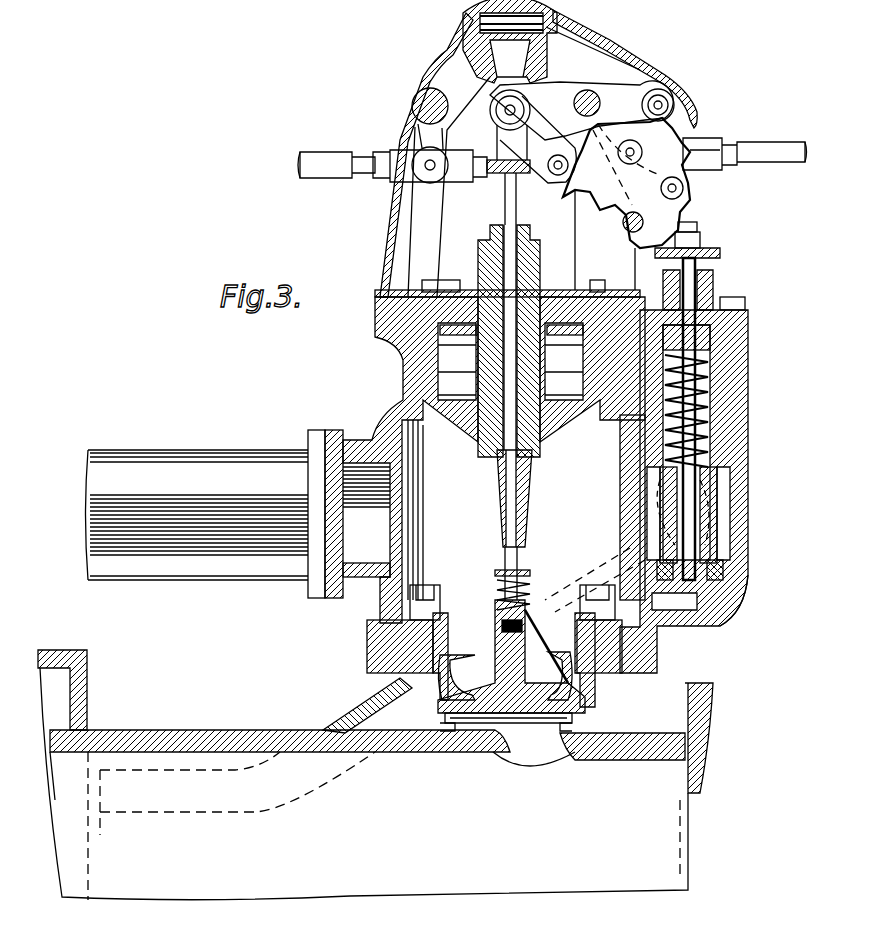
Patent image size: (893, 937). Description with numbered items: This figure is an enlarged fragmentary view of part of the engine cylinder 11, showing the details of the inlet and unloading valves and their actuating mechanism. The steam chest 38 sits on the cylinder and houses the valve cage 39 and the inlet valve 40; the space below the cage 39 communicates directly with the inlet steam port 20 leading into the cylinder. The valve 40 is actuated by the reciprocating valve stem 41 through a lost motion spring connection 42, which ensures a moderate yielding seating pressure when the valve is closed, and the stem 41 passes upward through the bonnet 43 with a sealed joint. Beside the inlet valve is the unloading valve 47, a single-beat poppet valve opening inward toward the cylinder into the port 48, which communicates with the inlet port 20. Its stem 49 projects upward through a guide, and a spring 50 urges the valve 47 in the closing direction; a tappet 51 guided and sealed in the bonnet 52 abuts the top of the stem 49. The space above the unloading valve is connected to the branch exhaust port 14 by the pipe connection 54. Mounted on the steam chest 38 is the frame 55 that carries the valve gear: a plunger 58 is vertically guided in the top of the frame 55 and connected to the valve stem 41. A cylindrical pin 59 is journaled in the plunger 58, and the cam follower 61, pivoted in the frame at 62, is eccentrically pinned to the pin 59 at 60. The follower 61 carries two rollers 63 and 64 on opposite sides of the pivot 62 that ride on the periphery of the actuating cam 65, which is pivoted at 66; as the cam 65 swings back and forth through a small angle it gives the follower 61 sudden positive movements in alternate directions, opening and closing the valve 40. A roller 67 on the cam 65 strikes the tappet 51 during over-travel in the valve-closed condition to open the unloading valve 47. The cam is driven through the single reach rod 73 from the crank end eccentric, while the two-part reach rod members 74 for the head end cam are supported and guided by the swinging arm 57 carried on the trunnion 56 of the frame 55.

The cylinder 11 is at (428, 795).
The branch port 14 is at (88, 702).
The inlet steam port 20 is at (545, 745).
The steam chest 38 is at (398, 418).
The valve cage 39 is at (450, 620).
The valve 40 is at (486, 628).
The valve stem 41 is at (530, 487).
The lost motion spring connection 42 is at (537, 578).
The bonnet 43 is at (440, 292).
The unloading valve 47 is at (700, 588).
The port 48 is at (723, 613).
The stem 49 is at (712, 454).
The spring 50 is at (712, 413).
The tappet 51 is at (700, 288).
The bonnet 52 is at (690, 285).
The pipe connection 54 is at (362, 714).
The frame 55 is at (405, 226).
The trunnion 56 is at (408, 107).
The swinging arm 57 is at (415, 134).
The plunger 58 is at (513, 53).
The cylindrical pin 59 is at (500, 118).
The eccentric pin connection 60 is at (520, 110).
The cam follower 61 is at (633, 93).
The pivot 62 is at (596, 96).
The roller 63 is at (548, 176).
The roller 64 is at (675, 98).
The actuating cam 65 is at (612, 200).
The pivot 66 is at (645, 221).
The roller 67 is at (685, 186).
The reach rod 73 is at (776, 148).
The reach rod member 74 is at (336, 170).